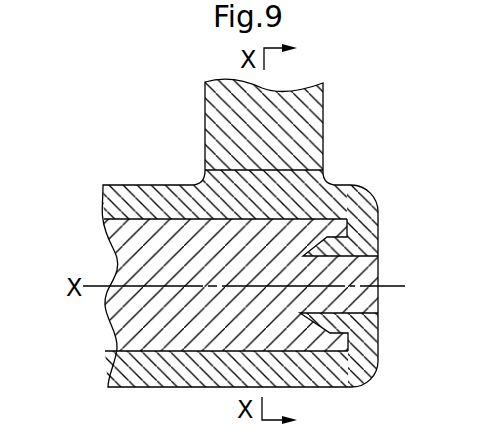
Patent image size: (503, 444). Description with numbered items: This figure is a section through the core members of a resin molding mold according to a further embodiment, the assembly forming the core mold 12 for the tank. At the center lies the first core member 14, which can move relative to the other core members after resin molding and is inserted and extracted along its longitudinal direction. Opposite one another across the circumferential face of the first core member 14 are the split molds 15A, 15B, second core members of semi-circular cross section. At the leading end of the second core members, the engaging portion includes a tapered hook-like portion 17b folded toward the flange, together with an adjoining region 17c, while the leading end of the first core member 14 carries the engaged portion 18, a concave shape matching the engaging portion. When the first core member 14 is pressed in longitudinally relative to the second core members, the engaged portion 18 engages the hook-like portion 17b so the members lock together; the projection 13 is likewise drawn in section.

The core mold 12 is at (392, 379).
The projection 13 is at (205, 108).
The first core member 14 is at (115, 250).
The split mold 15A is at (147, 185).
The split mold 15B is at (150, 390).
The hook-like portion 17b is at (303, 256).
The embedded portion 17c is at (378, 250).
The engaged portion 18 is at (378, 250).